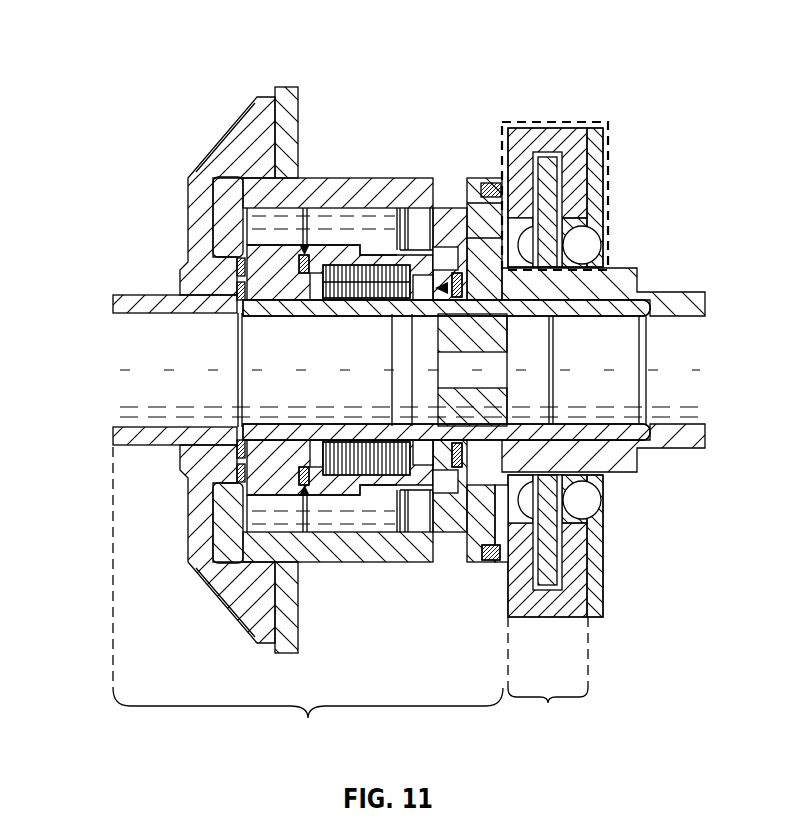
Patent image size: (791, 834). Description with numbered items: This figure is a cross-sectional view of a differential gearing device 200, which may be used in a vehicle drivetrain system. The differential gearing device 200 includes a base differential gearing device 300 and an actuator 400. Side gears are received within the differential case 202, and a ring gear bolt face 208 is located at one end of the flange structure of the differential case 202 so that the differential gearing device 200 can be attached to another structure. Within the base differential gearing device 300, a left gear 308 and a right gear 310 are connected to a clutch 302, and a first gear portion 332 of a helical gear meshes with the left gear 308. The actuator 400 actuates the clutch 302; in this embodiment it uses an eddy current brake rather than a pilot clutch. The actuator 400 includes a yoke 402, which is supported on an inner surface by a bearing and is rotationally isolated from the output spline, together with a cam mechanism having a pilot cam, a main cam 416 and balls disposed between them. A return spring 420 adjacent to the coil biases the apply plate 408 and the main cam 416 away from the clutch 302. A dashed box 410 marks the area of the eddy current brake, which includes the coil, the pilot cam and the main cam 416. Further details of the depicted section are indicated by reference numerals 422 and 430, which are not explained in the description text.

The differential gearing device 200 is at (116, 50).
The differential case 202 is at (258, 600).
The ring gear bolt face 208 is at (298, 108).
The base differential gearing device 300 is at (308, 602).
The clutch 302 is at (397, 470).
The left gear 308 is at (267, 277).
The right gear 310 is at (607, 427).
The first gear portion 332 is at (262, 223).
The actuator 400 is at (548, 676).
The yoke 402 is at (597, 175).
The apply plate 408 is at (497, 240).
The dashed box 410 is at (608, 152).
The main cam 416 is at (517, 490).
The return spring 420 is at (488, 548).
The retaining ring 422 is at (488, 278).
The bearing inner race 430 is at (547, 547).